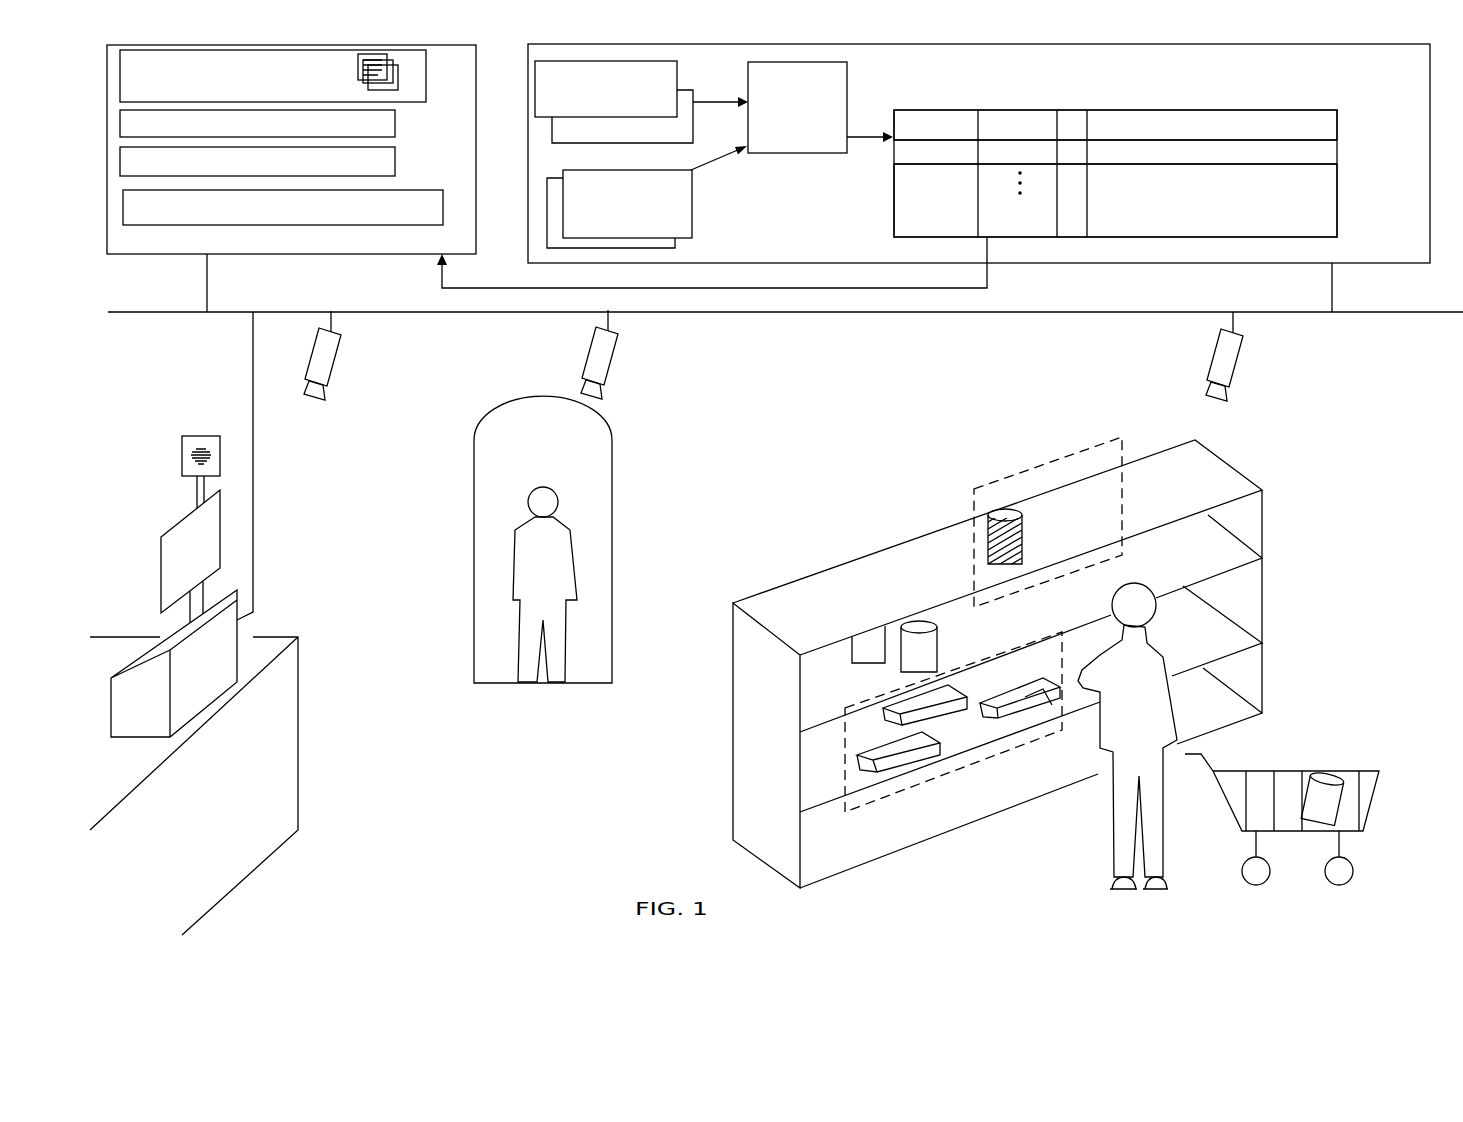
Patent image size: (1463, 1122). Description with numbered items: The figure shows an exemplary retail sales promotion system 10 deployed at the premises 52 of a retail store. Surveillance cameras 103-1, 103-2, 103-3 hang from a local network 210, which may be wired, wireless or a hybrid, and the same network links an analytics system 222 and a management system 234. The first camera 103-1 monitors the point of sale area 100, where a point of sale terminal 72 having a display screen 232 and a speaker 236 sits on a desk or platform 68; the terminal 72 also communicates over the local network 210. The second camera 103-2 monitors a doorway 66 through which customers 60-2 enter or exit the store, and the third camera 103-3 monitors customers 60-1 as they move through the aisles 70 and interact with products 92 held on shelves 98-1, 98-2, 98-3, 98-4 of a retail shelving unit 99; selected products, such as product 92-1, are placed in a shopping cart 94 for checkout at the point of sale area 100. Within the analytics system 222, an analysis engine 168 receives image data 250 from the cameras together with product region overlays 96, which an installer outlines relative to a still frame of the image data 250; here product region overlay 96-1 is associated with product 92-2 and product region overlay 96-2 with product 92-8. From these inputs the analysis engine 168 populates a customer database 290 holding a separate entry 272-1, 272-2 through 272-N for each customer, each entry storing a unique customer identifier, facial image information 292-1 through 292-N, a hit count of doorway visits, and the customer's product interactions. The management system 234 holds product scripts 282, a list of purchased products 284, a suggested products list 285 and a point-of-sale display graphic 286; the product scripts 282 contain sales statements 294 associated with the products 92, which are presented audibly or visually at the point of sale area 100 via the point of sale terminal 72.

The retail sales promotion system 10 is at (1398, 402).
The point of sale area 100 is at (314, 432).
The premises 52 is at (527, 882).
The customer 60-1 is at (1115, 838).
The customer 60-2 is at (540, 487).
The doorway 66 is at (612, 487).
The desk or platform 68 is at (273, 845).
The aisle 70 is at (1038, 651).
The point of sale terminal 72 is at (210, 652).
The product 92 is at (937, 643).
The product 92-1 is at (1335, 775).
The product 92-2 is at (1022, 540).
The product 92-8 is at (1012, 718).
The shopping cart 94 is at (1365, 820).
The product region overlay 96 is at (619, 209).
The product region overlay 96-1 is at (974, 508).
The product region overlay 96-2 is at (908, 793).
The shelf 98-1 is at (1203, 475).
The shelf 98-2 is at (1220, 554).
The shelf 98-3 is at (1220, 635).
The shelf 98-4 is at (1195, 694).
The retail shelving unit 99 is at (748, 739).
The surveillance camera 103-1 is at (335, 348).
The surveillance camera 103-2 is at (618, 344).
The surveillance camera 103-3 is at (1236, 378).
The analysis engine 168 is at (797, 107).
The local network 210 is at (900, 312).
The analytics system 222 is at (979, 170).
The display screen 232 is at (178, 522).
The management system 234 is at (291, 149).
The speaker 236 is at (183, 438).
The image data 250 is at (614, 102).
The entry 272-1 is at (1318, 126).
The entry 272-2 is at (1318, 152).
The entry 272-N is at (1318, 216).
The product scripts 282 is at (293, 97).
The list of purchased products 284 is at (257, 123).
The suggested products list 285 is at (257, 161).
The point-of-sale display graphic 286 is at (283, 207).
The customer database 290 is at (1107, 170).
The facial image information 292-1 is at (990, 110).
The facial image information 292-N is at (1012, 238).
The sales statement 294 is at (402, 88).